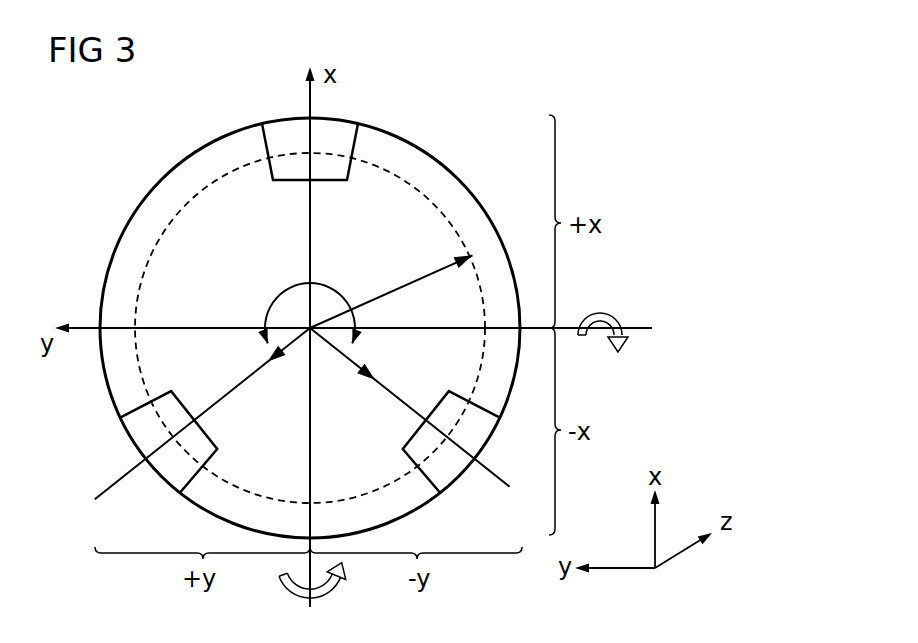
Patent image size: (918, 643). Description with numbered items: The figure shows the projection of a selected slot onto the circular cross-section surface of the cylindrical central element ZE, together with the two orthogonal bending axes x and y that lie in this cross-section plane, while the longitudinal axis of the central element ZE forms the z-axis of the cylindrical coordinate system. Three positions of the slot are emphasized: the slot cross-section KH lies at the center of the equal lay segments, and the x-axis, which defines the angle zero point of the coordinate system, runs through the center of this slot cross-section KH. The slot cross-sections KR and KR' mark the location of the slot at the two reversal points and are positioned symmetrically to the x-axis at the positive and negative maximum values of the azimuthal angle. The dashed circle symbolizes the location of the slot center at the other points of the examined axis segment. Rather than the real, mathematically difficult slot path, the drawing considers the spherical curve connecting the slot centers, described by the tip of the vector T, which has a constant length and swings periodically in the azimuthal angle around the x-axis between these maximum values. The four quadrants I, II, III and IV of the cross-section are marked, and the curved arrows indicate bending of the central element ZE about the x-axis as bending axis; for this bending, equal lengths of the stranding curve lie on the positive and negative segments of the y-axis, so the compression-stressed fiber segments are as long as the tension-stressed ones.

The central element ZE is at (132, 242).
The slot cross-section KH is at (278, 133).
The slot cross-section KR is at (470, 438).
The slot cross-section KR' is at (139, 438).
The vector T is at (430, 272).
The quadrant I is at (469, 137).
The quadrant II is at (133, 137).
The quadrant III is at (130, 502).
The quadrant IV is at (468, 502).